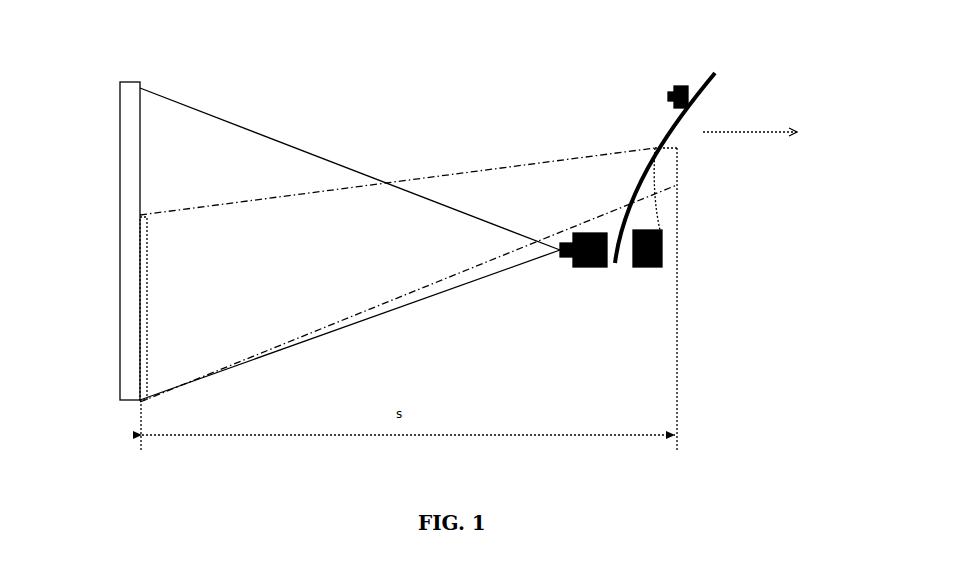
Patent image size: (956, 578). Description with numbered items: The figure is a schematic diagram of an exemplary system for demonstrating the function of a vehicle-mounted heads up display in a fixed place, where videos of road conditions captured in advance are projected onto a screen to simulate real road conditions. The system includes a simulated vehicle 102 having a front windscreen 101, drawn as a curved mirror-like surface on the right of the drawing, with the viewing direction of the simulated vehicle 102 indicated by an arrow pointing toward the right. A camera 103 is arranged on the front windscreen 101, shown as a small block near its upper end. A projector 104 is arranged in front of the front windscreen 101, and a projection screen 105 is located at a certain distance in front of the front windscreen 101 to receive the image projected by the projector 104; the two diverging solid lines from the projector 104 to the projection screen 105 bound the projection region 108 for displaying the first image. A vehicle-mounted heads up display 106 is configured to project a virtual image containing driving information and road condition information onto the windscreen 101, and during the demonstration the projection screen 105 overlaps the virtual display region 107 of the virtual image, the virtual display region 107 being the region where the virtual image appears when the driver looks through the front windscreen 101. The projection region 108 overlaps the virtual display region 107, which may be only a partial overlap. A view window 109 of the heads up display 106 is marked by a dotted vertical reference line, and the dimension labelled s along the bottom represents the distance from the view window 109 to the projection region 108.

The front windscreen 101 is at (660, 133).
The simulated vehicle 102 is at (773, 132).
The camera 103 is at (683, 85).
The projector 104 is at (592, 267).
The projection screen 105 is at (132, 122).
The vehicle-mounted heads up display 106 is at (663, 248).
The virtual display region 107 is at (147, 243).
The projection region 108 is at (145, 142).
The view window 109 is at (678, 163).